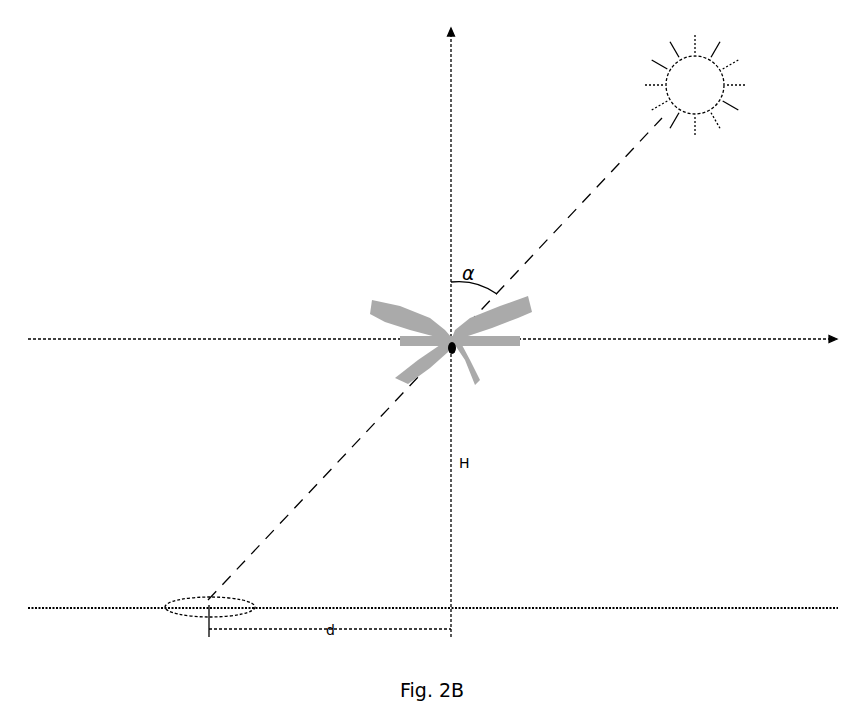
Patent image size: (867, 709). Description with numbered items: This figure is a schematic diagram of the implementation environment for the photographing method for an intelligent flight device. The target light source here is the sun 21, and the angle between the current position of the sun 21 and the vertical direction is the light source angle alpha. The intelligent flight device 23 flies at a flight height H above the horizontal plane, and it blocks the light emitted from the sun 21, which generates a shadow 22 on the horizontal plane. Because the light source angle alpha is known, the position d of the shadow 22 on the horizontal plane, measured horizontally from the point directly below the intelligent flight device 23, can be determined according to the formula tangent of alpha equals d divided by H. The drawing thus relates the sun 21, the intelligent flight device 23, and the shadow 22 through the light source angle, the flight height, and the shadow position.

The sun 21 is at (750, 70).
The shadow 22 is at (172, 603).
The intelligent flight device 23 is at (538, 302).